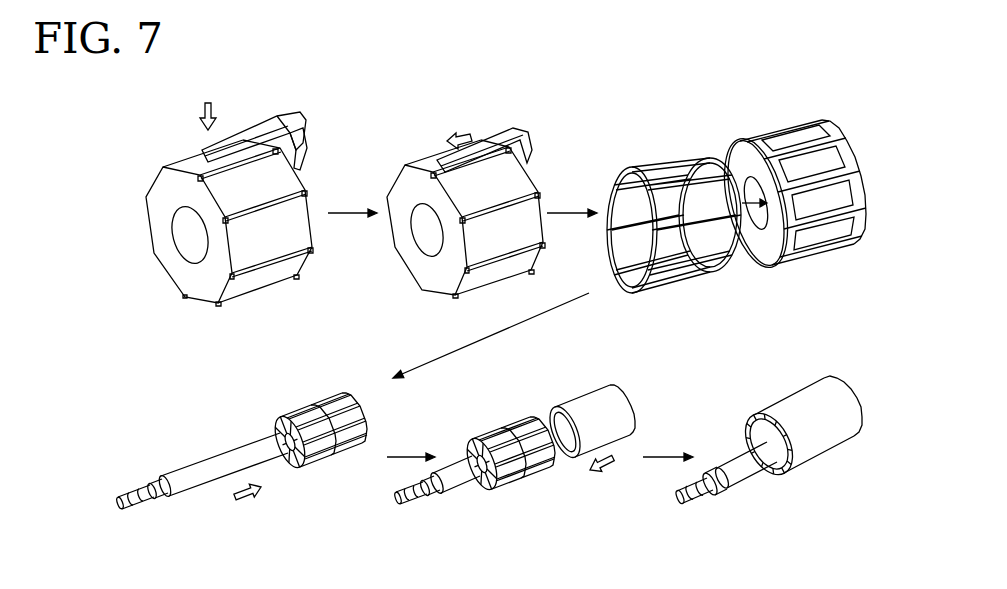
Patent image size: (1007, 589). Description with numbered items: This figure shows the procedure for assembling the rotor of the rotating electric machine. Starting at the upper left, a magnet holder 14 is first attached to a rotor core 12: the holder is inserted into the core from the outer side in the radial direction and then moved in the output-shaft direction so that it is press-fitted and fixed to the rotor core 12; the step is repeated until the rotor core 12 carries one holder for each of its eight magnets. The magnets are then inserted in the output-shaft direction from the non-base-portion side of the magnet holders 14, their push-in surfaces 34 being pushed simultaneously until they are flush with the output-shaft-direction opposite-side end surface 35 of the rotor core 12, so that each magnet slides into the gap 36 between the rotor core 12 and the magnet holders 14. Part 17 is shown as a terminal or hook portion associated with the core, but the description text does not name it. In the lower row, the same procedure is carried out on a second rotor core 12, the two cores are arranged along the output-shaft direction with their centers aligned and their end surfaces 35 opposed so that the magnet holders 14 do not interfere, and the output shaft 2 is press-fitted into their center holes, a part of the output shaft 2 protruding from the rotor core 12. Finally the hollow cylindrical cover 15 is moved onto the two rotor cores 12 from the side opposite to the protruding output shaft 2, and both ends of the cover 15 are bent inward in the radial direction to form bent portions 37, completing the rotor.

The output shaft 2 is at (208, 473).
The rotor core 12 is at (127, 195).
The magnet holder 14 is at (273, 127).
The cover 15 is at (613, 423).
The terminal hook 17 is at (297, 170).
The push-in surface 34 is at (630, 170).
The output-shaft-direction opposite-side end surface 35 is at (770, 243).
The gap 36 is at (823, 217).
The bent portion 37 is at (767, 476).